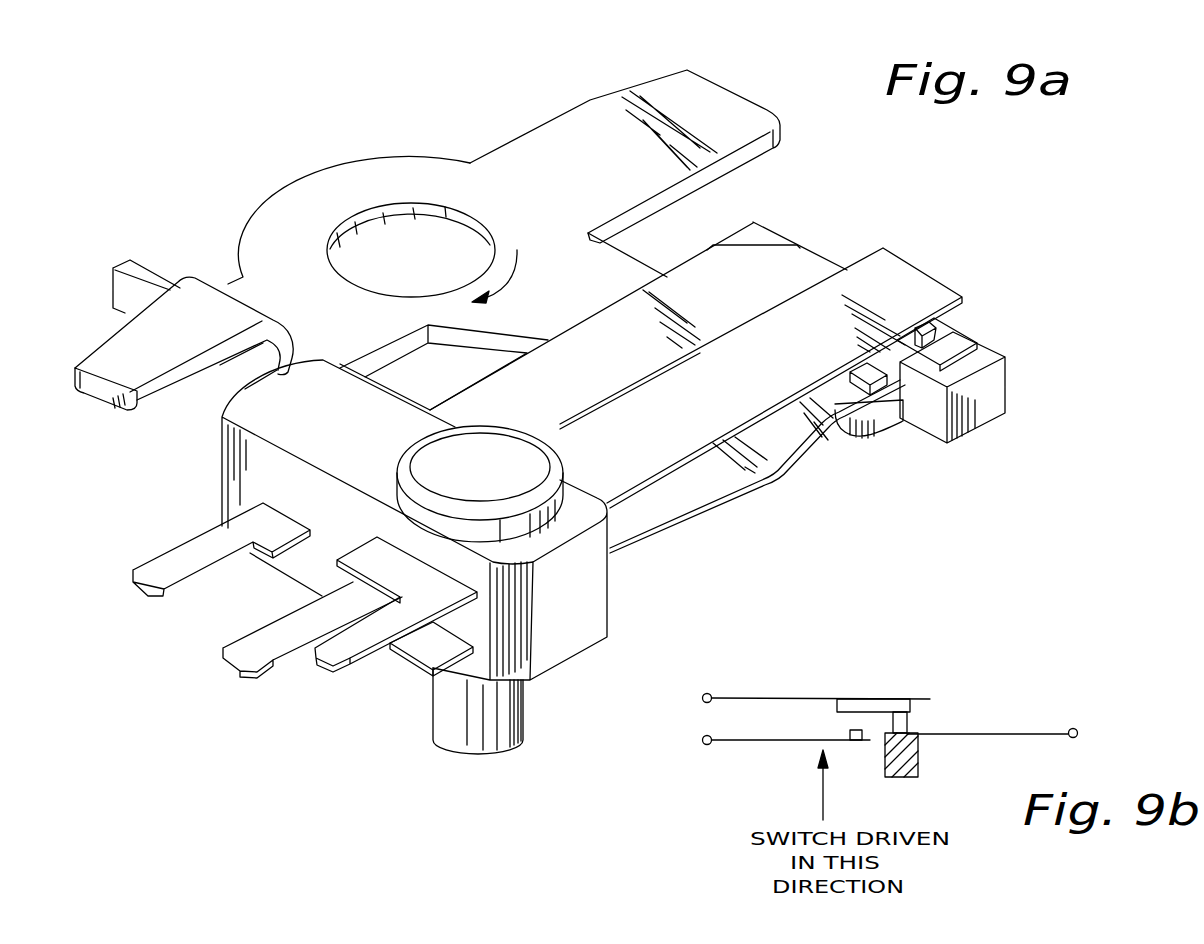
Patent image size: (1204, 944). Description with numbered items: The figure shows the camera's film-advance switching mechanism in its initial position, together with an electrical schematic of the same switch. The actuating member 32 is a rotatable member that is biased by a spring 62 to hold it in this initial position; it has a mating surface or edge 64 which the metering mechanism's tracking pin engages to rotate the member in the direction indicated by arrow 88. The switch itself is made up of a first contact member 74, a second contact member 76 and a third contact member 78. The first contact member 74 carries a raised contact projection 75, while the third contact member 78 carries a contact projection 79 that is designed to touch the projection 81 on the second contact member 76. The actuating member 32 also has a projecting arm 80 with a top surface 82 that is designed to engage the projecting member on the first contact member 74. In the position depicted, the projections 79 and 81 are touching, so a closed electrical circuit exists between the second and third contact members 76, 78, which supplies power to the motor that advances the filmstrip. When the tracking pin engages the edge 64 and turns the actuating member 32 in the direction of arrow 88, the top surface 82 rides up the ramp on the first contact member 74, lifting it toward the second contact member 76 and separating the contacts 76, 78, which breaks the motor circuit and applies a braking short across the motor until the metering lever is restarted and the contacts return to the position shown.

In FIG. 9A, the actuating member 32 is at (528, 152).
In FIG. 9A, the spring 62 is at (140, 400).
In FIG. 9A, the mating surface (edge) of actuating member 64 is at (643, 80).
In FIG. 9A, the first contact member 74 is at (618, 543).
In FIG. 9B, the first contact member 74 is at (783, 743).
In FIG. 9B, the raised contact projection 75 is at (850, 732).
In FIG. 9A, the second contact member 76 is at (703, 394).
In FIG. 9B, the second contact member 76 is at (797, 698).
In FIG. 9A, the third contact member 78 is at (565, 375).
In FIG. 9B, the third contact member 78 is at (993, 733).
In FIG. 9B, the contact projection 79 is at (907, 722).
In FIG. 9A, the projecting arm 80 is at (627, 275).
In FIG. 9B, the contact projection 81 is at (884, 705).
In FIG. 9A, the top surface of projecting arm 82 is at (883, 408).
In FIG. 9A, the arrow indicating direction of rotation 88 is at (517, 252).